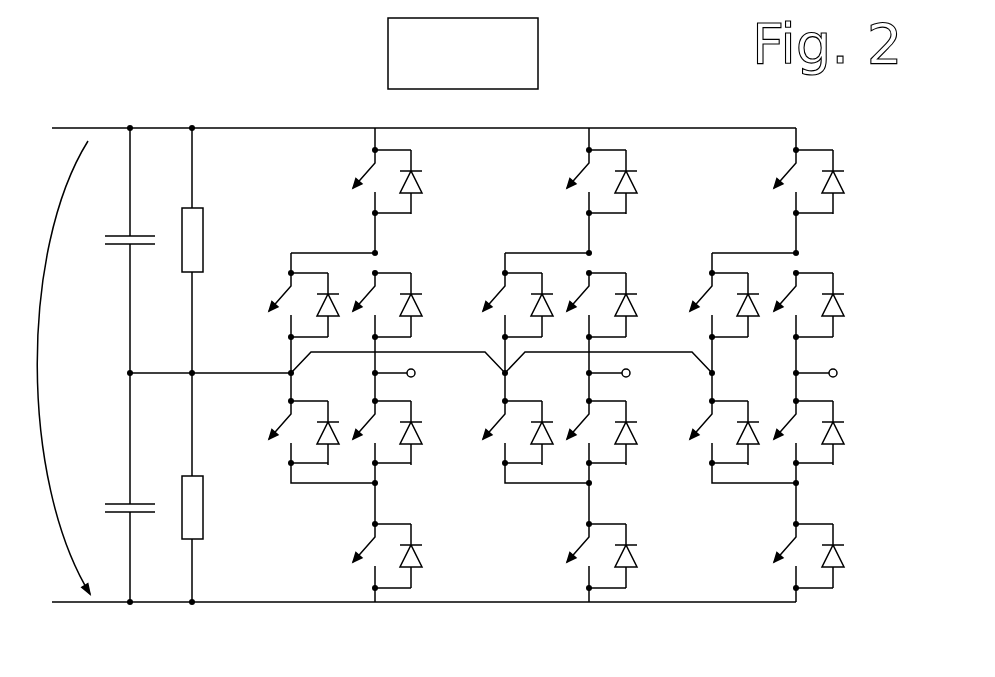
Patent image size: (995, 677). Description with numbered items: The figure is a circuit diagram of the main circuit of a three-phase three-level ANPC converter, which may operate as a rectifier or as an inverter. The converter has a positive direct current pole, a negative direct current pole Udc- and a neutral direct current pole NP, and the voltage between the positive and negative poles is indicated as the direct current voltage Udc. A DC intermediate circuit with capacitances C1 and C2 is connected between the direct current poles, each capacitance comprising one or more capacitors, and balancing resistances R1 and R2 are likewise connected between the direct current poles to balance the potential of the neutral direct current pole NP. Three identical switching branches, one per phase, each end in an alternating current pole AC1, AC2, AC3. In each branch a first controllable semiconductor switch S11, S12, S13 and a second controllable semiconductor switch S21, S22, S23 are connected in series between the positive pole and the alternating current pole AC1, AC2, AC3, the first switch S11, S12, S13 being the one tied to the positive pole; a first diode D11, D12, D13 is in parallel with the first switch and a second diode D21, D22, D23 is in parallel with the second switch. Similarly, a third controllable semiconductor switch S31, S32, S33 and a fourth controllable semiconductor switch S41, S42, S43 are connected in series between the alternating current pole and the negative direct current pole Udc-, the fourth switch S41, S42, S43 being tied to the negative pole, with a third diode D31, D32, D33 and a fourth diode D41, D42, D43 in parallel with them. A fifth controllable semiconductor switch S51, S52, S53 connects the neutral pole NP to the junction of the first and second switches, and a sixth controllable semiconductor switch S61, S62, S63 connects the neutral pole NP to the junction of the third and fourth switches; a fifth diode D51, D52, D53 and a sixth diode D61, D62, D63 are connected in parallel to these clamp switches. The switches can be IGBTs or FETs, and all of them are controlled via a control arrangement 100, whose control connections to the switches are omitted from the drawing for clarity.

The control arrangement 100 is at (538, 50).
The capacitance C1 is at (114, 250).
The capacitance C2 is at (114, 487).
The balancing resistance R1 is at (207, 250).
The balancing resistance R2 is at (207, 487).
The neutral direct current pole NP is at (103, 373).
The DC-link voltage Udc is at (63, 367).
The negative direct current pole Udc- is at (85, 635).
The alternating current pole AC1 is at (413, 373).
The alternating current pole AC2 is at (628, 373).
The alternating current pole AC3 is at (835, 373).
The first controllable semiconductor switch S11 is at (356, 182).
The second controllable semiconductor switch S21 is at (356, 307).
The third controllable semiconductor switch S31 is at (356, 433).
The fourth controllable semiconductor switch S41 is at (356, 556).
The fifth controllable semiconductor switch S51 is at (274, 305).
The sixth controllable semiconductor switch S61 is at (274, 433).
The first diode D11 is at (416, 182).
The second diode D21 is at (415, 305).
The third diode D31 is at (415, 433).
The fourth diode D41 is at (415, 556).
The fifth diode D51 is at (327, 305).
The sixth diode D61 is at (327, 433).
The first controllable semiconductor switch S12 is at (570, 182).
The second controllable semiconductor switch S22 is at (570, 307).
The third controllable semiconductor switch S32 is at (570, 433).
The fourth controllable semiconductor switch S42 is at (570, 556).
The fifth controllable semiconductor switch S52 is at (488, 305).
The sixth controllable semiconductor switch S62 is at (488, 433).
The first diode D12 is at (630, 182).
The second diode D22 is at (630, 305).
The third diode D32 is at (630, 433).
The fourth diode D42 is at (630, 556).
The fifth diode D52 is at (541, 305).
The sixth diode D62 is at (541, 433).
The first controllable semiconductor switch S13 is at (777, 182).
The second controllable semiconductor switch S23 is at (777, 307).
The third controllable semiconductor switch S33 is at (777, 433).
The fourth controllable semiconductor switch S43 is at (777, 556).
The fifth controllable semiconductor switch S53 is at (695, 305).
The sixth controllable semiconductor switch S63 is at (695, 433).
The first diode D13 is at (837, 182).
The second diode D23 is at (837, 305).
The third diode D33 is at (837, 433).
The fourth diode D43 is at (837, 556).
The fifth diode D53 is at (748, 305).
The sixth diode D63 is at (748, 433).